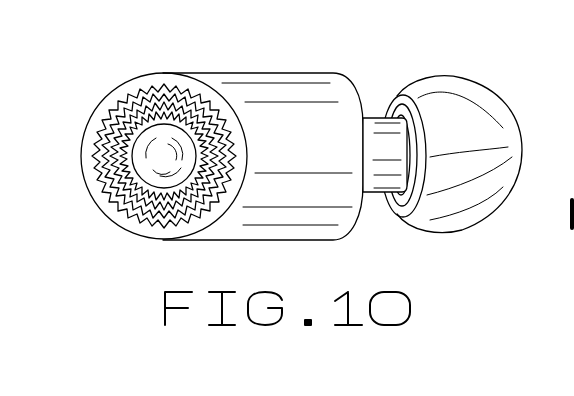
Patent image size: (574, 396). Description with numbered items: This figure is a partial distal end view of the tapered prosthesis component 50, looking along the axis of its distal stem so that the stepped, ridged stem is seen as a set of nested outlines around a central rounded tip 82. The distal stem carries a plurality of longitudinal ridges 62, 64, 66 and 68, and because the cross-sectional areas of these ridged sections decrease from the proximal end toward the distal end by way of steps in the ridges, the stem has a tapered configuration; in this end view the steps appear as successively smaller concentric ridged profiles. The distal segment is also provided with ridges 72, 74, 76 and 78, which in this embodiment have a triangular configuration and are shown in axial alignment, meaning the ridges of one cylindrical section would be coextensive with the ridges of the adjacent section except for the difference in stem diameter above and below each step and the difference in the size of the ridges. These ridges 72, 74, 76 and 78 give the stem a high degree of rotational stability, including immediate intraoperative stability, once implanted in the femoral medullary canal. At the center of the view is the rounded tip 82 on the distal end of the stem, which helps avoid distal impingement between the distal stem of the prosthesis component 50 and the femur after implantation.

The tapered prosthesis component 50 is at (374, 91).
The longitudinal ridge 62 is at (102, 182).
The longitudinal ridge 64 is at (92, 142).
The longitudinal ridge 66 is at (110, 118).
The longitudinal ridge 68 is at (130, 95).
The ridge 72 is at (233, 202).
The ridge 74 is at (126, 209).
The ridge 76 is at (225, 155).
The ridge 78 is at (205, 129).
The rounded tip 82 is at (168, 148).